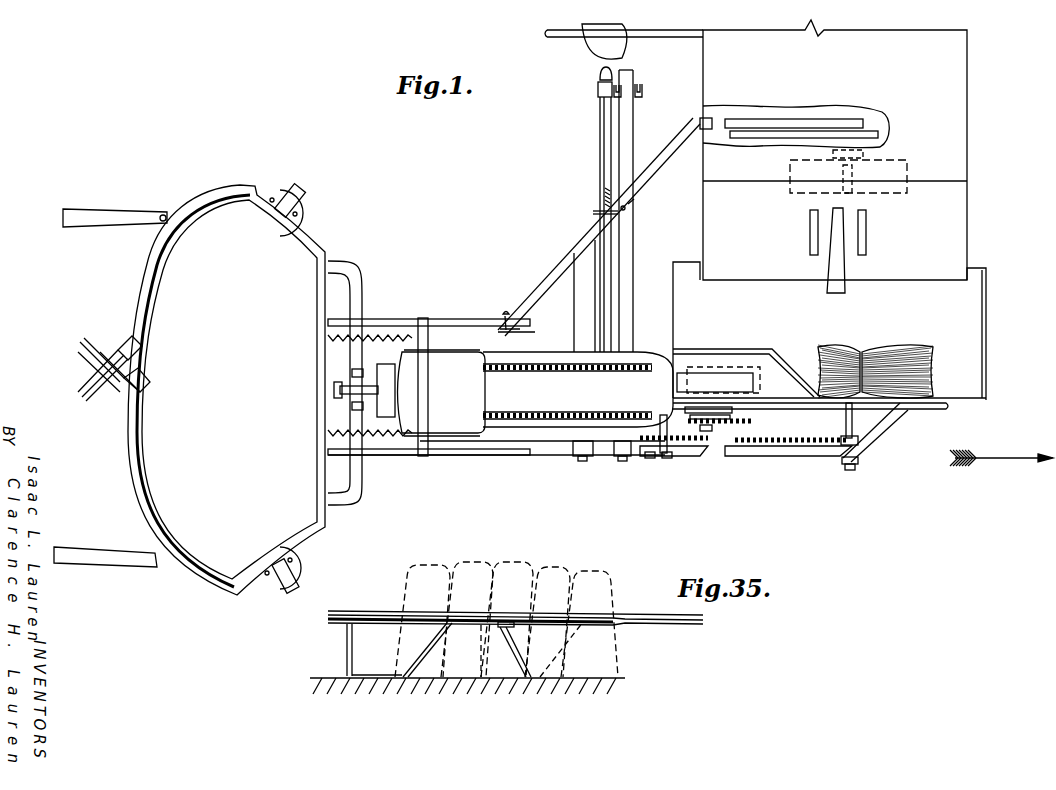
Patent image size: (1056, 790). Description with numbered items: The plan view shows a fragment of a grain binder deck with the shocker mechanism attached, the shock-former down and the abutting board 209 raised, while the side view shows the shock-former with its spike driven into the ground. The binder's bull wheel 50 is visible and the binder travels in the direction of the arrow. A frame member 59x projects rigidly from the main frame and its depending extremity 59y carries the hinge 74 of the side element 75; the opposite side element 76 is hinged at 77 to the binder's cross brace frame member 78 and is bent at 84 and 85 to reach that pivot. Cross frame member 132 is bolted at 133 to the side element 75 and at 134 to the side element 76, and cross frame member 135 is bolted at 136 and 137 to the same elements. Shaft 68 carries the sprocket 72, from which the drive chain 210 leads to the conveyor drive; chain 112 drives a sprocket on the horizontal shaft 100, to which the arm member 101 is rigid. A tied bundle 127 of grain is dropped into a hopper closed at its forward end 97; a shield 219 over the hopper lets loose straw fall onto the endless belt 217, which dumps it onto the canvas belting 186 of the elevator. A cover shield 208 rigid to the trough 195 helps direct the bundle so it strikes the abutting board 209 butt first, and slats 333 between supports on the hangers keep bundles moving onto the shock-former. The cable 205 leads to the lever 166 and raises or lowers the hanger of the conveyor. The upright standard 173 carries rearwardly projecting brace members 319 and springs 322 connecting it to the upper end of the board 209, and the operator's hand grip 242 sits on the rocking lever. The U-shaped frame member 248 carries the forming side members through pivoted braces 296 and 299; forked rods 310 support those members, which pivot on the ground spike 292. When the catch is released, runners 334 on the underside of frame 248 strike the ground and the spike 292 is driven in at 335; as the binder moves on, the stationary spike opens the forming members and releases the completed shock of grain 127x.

In FIG. 1, the abutting board 209 is at (226, 390).
In FIG. 1, the pivoted brace 299 is at (300, 193).
In FIG. 1, the brace 296 is at (292, 593).
In FIG. 1, the U-shaped frame member 248 is at (88, 226).
In FIG. 1, the forked rod 310 is at (88, 378).
In FIG. 1, the brace member 319 is at (404, 318).
In FIG. 1, the spring 322 is at (370, 385).
In FIG. 1, the upright inverted U-shaped frame member 173 is at (429, 396).
In FIG. 1, the cover shield 208 is at (442, 393).
In FIG. 1, the slat 333 is at (390, 390).
In FIG. 1, the ground spike 292 is at (332, 397).
In FIG. 35, the ground spike 292 is at (518, 648).
In FIG. 1, the canvas belting 186 is at (578, 389).
In FIG. 1, the trough 195 is at (526, 430).
In FIG. 1, the bolted connection 136 is at (580, 462).
In FIG. 1, the bolted connection 133 is at (622, 462).
In FIG. 1, the bolted connection 137 is at (582, 238).
In FIG. 1, the hand grip 242 is at (598, 78).
In FIG. 1, the cross frame member 132 is at (629, 263).
In FIG. 1, the lever 166 is at (572, 143).
In FIG. 1, the bolted connection 134 is at (631, 203).
In FIG. 1, the side element 76 is at (688, 130).
In FIG. 1, the bend 85 is at (698, 118).
In FIG. 1, the cross frame member 135 is at (578, 290).
In FIG. 1, the bend 84 is at (514, 336).
In FIG. 1, the cable 205 is at (504, 314).
In FIG. 1, the bull wheel 50 is at (895, 175).
In FIG. 1, the cross brace frame member 78 is at (838, 125).
In FIG. 1, the hinge 77 is at (883, 133).
In FIG. 1, the closed forward end 97 is at (987, 338).
In FIG. 1, the arm member 101 is at (950, 406).
In FIG. 1, the tied bundle 127 is at (896, 352).
In FIG. 1, the shield 219 is at (720, 350).
In FIG. 1, the endless belt 217 is at (718, 380).
In FIG. 1, the chain 112 is at (742, 420).
In FIG. 1, the horizontal shaft 100 is at (704, 430).
In FIG. 1, the drive chain 210 is at (770, 440).
In FIG. 1, the side element 75 is at (755, 457).
In FIG. 1, the shaft 68 is at (846, 414).
In FIG. 1, the sprocket 72 is at (845, 438).
In FIG. 1, the frame member 59x is at (872, 430).
In FIG. 1, the hinge 74 is at (853, 470).
In FIG. 1, the depending extremity 59y is at (841, 462).
In FIG. 35, the runner 334 is at (492, 680).
In FIG. 35, the ground point 335 is at (516, 680).
In FIG. 35, the shock of grain 127x is at (506, 619).